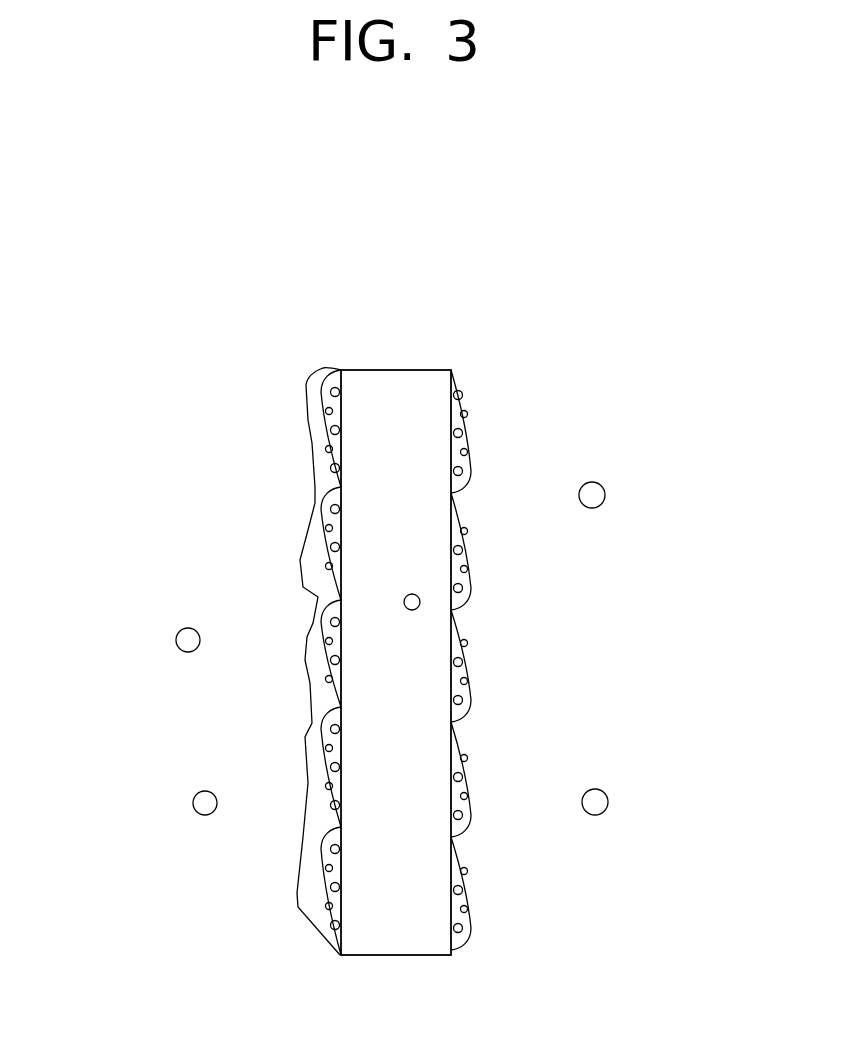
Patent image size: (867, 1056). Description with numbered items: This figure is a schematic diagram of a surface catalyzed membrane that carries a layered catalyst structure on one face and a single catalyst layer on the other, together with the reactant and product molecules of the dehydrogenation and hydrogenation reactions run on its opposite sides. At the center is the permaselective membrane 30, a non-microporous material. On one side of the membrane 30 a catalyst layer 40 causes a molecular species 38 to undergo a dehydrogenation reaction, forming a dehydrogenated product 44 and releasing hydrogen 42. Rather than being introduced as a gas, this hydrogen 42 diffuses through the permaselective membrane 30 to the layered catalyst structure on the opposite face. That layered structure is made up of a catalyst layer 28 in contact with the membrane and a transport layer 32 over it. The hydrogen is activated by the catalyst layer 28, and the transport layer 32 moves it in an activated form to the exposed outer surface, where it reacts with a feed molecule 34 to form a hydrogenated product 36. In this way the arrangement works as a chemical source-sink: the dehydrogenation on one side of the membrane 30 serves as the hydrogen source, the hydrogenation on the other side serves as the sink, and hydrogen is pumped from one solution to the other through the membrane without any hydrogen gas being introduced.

The catalyst layer 28 is at (316, 381).
The permaselective membrane 30 is at (387, 350).
The transport layer 32 is at (280, 480).
The feed molecule 34 is at (150, 640).
The hydrogenated product 36 is at (170, 803).
The molecular species 38 is at (635, 495).
The catalyst layer 40 is at (499, 704).
The hydrogen 42 is at (451, 616).
The dehydrogenated product 44 is at (647, 802).